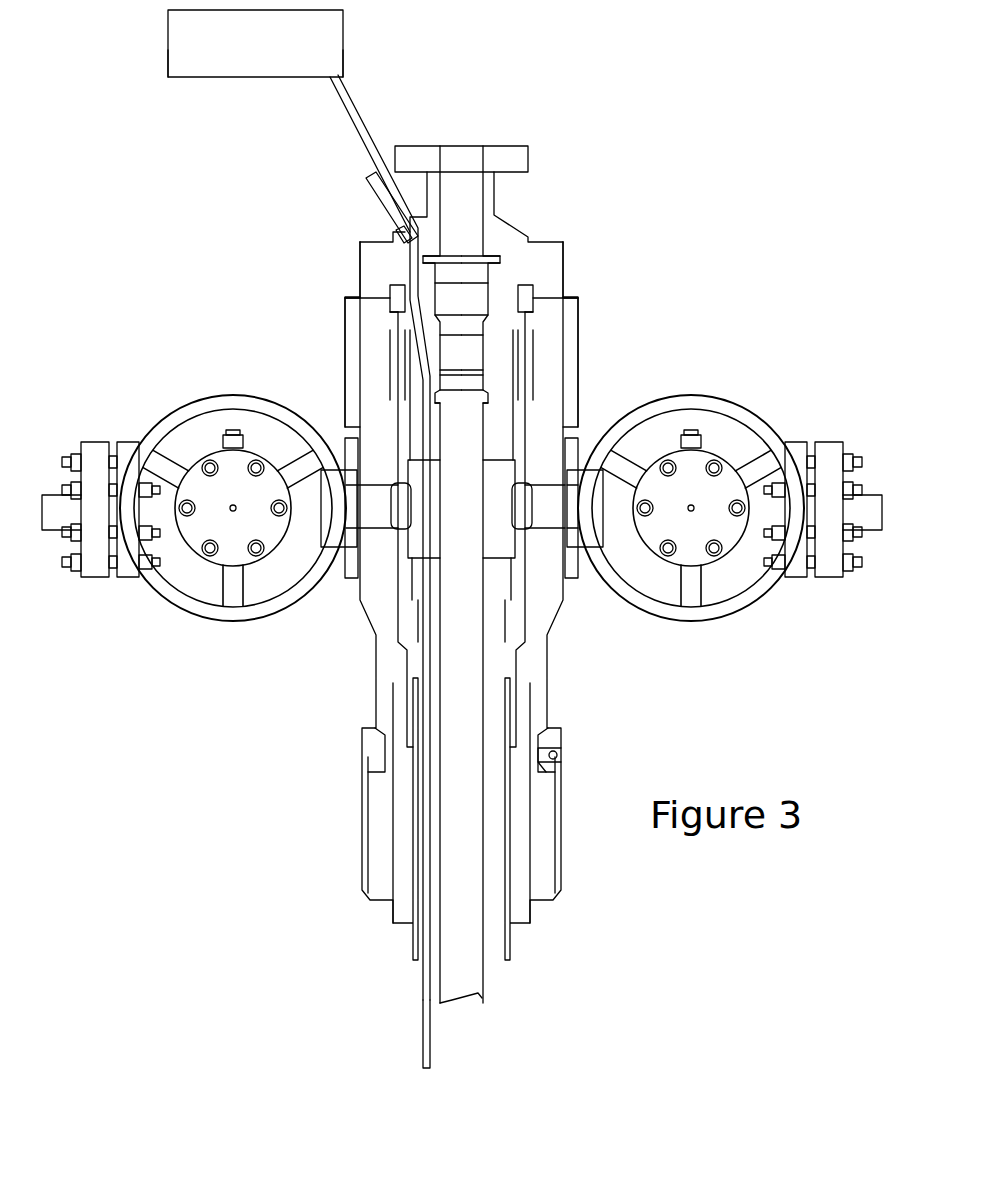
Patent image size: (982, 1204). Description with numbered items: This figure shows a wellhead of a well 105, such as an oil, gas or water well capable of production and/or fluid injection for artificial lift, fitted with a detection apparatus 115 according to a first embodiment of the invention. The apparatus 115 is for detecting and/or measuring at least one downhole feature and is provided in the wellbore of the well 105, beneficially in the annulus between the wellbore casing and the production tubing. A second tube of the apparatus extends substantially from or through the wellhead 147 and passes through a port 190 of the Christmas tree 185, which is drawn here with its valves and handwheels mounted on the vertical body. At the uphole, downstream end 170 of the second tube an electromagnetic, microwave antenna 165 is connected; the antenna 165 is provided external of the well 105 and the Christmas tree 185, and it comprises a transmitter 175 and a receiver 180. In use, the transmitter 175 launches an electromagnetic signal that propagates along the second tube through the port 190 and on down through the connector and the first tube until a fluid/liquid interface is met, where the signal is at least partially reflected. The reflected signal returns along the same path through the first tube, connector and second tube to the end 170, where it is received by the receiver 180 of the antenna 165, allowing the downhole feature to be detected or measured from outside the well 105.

The well 105 is at (327, 847).
The apparatus 115 is at (420, 1015).
The wellhead 147 is at (795, 578).
The electromagnetic antenna 165 is at (343, 33).
The end of the second tube 170 is at (313, 98).
The transmitter 175 is at (185, 70).
The receiver 180 is at (323, 62).
The Christmas tree 185 is at (358, 268).
The port 190 is at (368, 197).